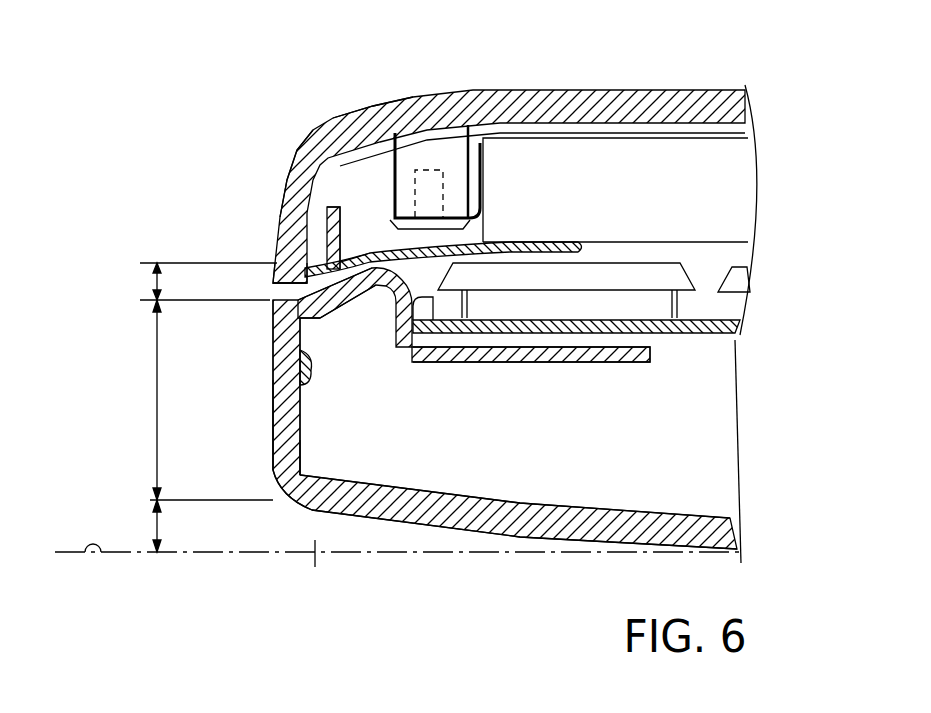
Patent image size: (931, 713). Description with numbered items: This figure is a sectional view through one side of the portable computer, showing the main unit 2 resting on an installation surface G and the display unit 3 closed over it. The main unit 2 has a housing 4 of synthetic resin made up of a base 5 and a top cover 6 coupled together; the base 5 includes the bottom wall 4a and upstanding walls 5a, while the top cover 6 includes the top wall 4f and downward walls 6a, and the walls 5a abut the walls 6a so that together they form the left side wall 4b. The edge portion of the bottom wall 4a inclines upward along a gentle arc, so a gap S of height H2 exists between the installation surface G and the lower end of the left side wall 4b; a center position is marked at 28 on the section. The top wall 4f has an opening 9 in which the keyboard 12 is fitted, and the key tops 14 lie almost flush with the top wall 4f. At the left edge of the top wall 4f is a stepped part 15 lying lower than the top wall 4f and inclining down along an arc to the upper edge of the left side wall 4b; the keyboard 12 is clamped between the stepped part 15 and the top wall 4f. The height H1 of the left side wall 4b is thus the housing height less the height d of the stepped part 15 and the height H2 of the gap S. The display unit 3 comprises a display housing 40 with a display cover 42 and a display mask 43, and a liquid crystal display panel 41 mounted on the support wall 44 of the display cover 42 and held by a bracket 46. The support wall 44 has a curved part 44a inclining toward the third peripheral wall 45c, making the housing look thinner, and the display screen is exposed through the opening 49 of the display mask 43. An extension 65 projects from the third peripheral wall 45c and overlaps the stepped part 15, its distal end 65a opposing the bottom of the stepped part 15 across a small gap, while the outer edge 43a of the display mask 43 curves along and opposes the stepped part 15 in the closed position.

The main unit 2 is at (740, 455).
The display unit 3 is at (768, 148).
The housing 4 is at (370, 388).
The bottom wall 4a is at (688, 525).
The left side wall 4b is at (273, 410).
The top wall 4f is at (330, 210).
The base 5 is at (303, 457).
The walls 5a is at (297, 457).
The top cover 6 is at (305, 360).
The walls 6a is at (297, 322).
The opening 9 is at (433, 320).
The keyboard 12 is at (745, 311).
The key tops 14 is at (638, 273).
The stepped part 15 is at (332, 298).
The center position 28 is at (505, 540).
The display housing 40 is at (580, 44).
The liquid crystal display panel 41 is at (742, 208).
The display cover 42 is at (500, 95).
The display mask 43 is at (542, 243).
The outer edge 43a is at (387, 247).
The support wall 44 is at (693, 95).
The curved part 44a is at (337, 128).
The third peripheral wall 45c is at (292, 155).
The bracket 46 is at (453, 213).
The opening 49 is at (593, 243).
The extension 65 is at (273, 263).
The distal end 65a is at (277, 293).
The height of the stepped parts d is at (152, 282).
The height of the left side wall H1 is at (195, 400).
The height of the gap H2 is at (138, 526).
The gap S is at (316, 571).
The installation surface G is at (88, 563).